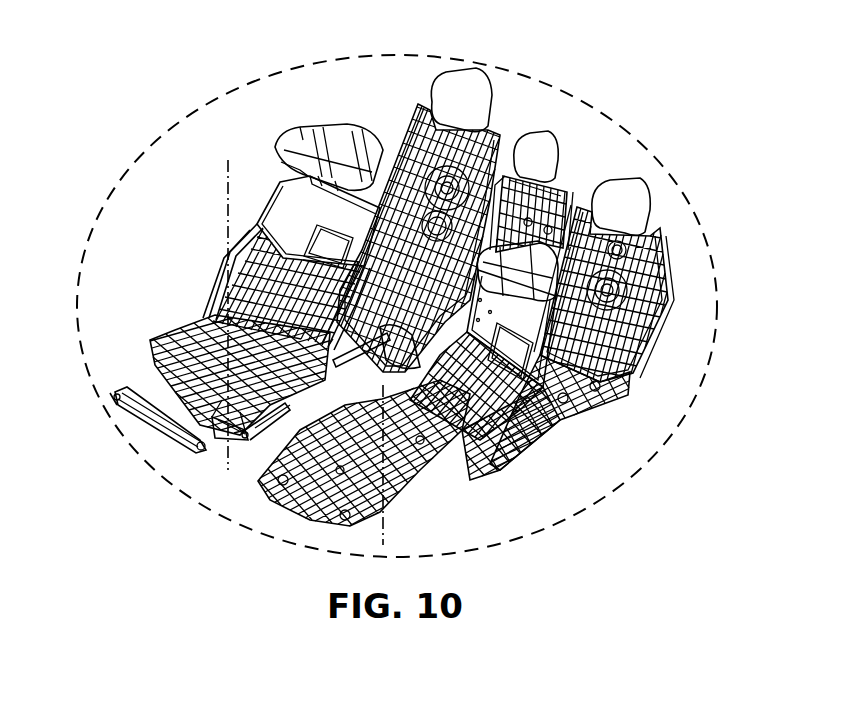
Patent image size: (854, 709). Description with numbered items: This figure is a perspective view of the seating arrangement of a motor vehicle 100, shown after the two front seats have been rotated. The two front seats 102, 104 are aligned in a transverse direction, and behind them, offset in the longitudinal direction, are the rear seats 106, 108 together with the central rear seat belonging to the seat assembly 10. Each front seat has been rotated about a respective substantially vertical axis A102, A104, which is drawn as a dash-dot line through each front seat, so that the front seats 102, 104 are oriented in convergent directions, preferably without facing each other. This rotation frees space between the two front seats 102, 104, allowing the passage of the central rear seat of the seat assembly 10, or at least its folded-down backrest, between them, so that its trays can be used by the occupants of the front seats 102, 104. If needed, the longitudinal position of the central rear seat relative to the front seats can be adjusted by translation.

The seat assembly 10 is at (535, 152).
The motor vehicle 100 is at (662, 447).
The front seat 102 is at (268, 497).
The front seat 104 is at (300, 145).
The rear seat 106 is at (627, 195).
The rear seat 108 is at (455, 92).
The substantially vertical axis A102 is at (387, 525).
The substantially vertical axis A104 is at (227, 207).